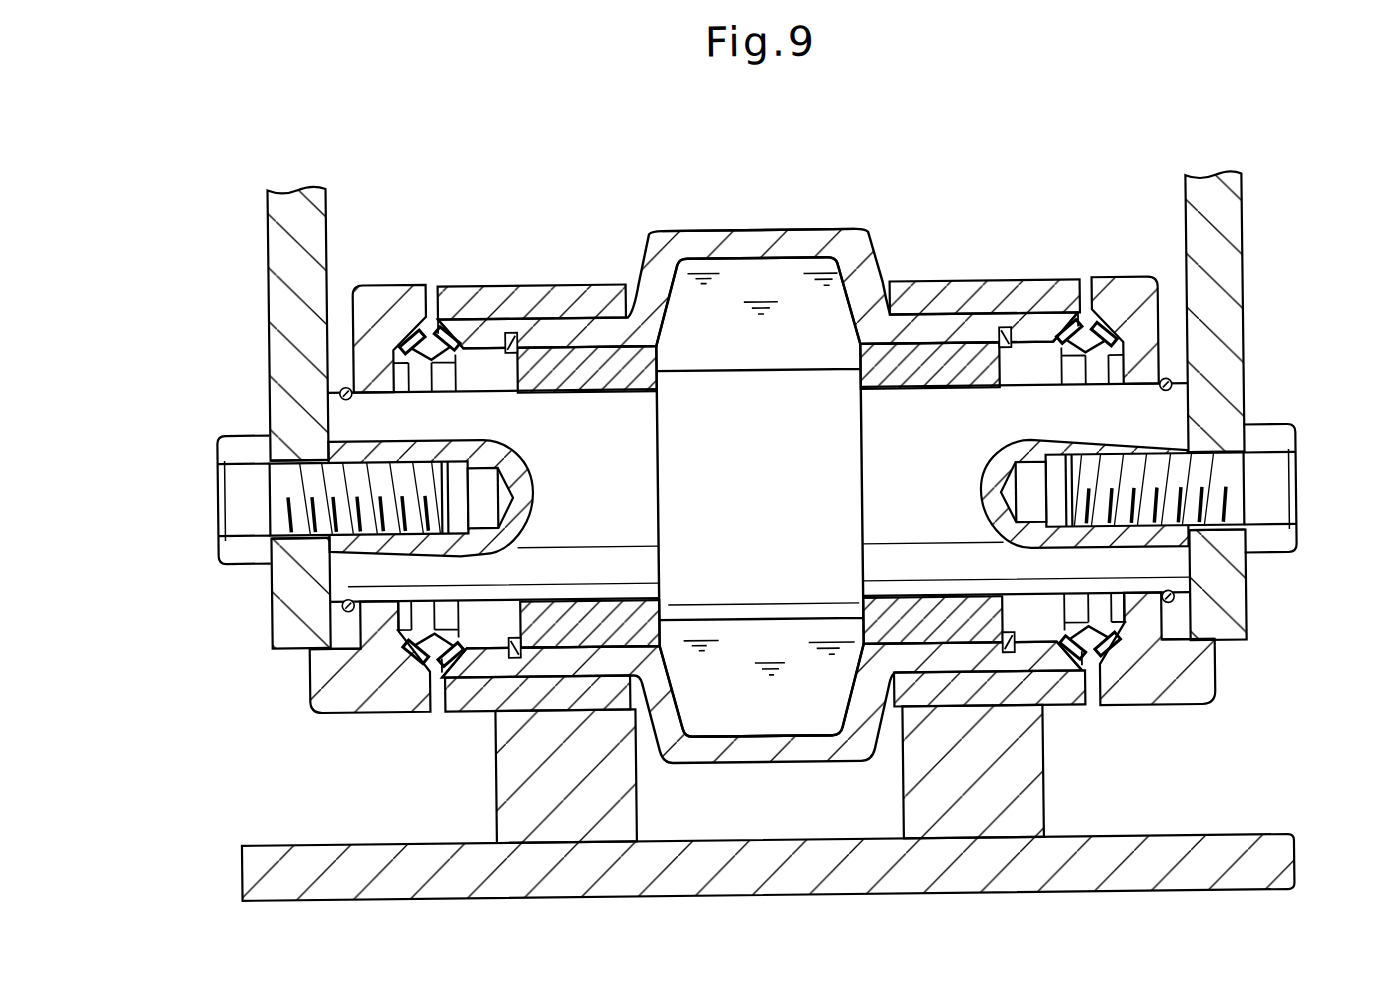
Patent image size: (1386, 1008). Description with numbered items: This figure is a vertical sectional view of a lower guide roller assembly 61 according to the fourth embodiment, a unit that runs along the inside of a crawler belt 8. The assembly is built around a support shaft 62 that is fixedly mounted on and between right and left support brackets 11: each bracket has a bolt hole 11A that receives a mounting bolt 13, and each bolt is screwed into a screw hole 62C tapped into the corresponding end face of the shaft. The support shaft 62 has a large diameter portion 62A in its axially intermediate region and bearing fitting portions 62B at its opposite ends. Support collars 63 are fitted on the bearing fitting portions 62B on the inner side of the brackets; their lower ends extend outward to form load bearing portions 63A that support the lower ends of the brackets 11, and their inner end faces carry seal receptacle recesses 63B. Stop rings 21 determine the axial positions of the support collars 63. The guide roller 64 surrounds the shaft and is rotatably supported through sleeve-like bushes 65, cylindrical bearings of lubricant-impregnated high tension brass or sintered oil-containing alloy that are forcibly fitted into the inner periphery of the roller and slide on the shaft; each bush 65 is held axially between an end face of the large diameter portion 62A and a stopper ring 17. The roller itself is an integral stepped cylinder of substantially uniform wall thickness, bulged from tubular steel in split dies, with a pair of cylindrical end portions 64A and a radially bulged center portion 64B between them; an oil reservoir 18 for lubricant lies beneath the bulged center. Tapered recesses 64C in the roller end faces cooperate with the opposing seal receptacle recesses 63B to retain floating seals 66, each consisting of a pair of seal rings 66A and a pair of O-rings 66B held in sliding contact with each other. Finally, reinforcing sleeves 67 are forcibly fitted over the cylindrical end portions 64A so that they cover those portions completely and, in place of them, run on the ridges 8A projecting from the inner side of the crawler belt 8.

The crawler belt 8 is at (1272, 860).
The ridges 8A is at (620, 810).
The support brackets 11 is at (283, 225).
The bolt holes 11A is at (300, 512).
The mounting bolts 13 is at (235, 510).
The stopper ring 17 is at (512, 332).
The oil reservoir 18 is at (772, 717).
The stop rings 21 is at (341, 383).
The lower guide roller assembly 61 is at (748, 230).
The support shaft 62 is at (732, 365).
The large diameter portion 62A is at (797, 387).
The bearing fitting portions 62B is at (343, 413).
The screw holes 62C is at (360, 468).
The support collars 63 is at (323, 682).
The load bearing portions 63A is at (320, 640).
The seal receptacle recesses 63B is at (393, 618).
The guide roller 64 is at (667, 229).
The cylindrical end portions 64A is at (477, 327).
The radially bulged center portion 64B is at (845, 228).
The tapered recesses 64C is at (448, 653).
The sleeve-like bushes 65 is at (617, 353).
The floating seals 66 is at (433, 310).
The seal rings 66A is at (393, 343).
The O-rings 66B is at (404, 634).
The reinforcing sleeves 67 is at (577, 293).